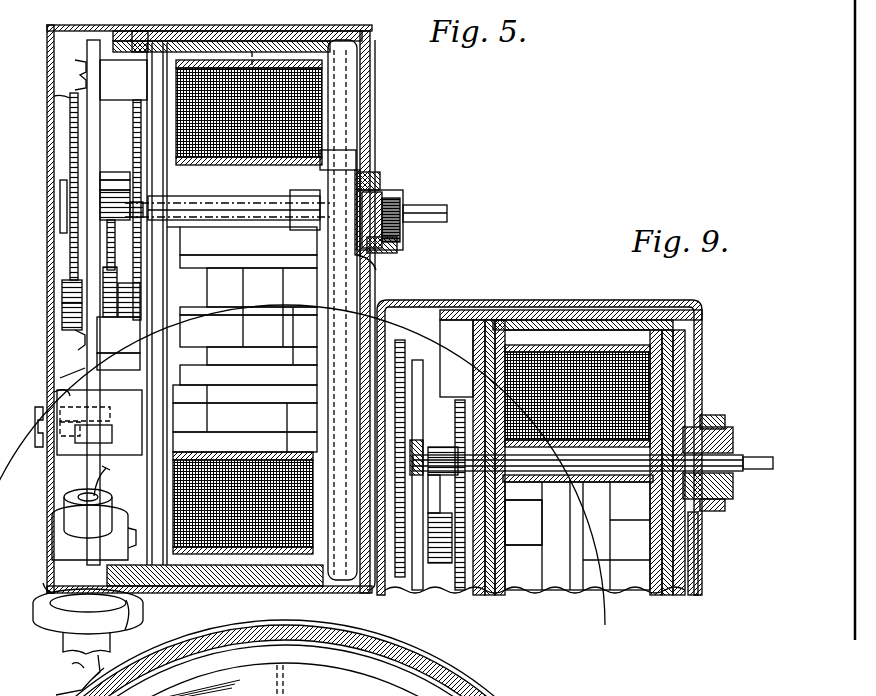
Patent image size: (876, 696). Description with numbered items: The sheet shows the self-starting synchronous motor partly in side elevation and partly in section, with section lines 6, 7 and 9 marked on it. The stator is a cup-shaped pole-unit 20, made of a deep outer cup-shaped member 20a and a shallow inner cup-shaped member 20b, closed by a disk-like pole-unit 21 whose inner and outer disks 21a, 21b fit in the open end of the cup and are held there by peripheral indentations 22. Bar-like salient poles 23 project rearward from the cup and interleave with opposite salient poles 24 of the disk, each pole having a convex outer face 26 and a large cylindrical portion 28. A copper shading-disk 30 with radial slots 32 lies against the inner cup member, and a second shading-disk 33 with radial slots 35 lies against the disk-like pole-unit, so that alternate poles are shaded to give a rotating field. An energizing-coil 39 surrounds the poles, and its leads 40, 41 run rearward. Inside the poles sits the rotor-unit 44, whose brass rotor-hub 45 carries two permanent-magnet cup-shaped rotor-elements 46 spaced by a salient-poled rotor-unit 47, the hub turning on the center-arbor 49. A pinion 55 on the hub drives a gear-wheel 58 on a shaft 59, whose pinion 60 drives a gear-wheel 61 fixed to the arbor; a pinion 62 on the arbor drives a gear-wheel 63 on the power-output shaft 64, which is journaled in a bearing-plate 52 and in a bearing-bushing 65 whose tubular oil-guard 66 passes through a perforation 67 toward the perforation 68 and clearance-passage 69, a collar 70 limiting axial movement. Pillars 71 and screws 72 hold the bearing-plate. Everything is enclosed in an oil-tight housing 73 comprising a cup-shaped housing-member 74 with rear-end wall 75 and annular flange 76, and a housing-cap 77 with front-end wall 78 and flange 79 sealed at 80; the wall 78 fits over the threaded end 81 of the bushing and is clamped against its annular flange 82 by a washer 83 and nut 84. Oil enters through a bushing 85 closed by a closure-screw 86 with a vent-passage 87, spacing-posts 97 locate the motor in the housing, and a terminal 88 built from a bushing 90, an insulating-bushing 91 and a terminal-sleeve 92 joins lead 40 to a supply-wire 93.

In FIG. 5, the cup-shaped pole-unit 20 is at (371, 36).
In FIG. 9, the cup-shaped pole-unit 20 is at (690, 330).
In FIG. 5, the outer cup-shaped member 20a is at (357, 52).
In FIG. 9, the outer cup-shaped member 20a is at (690, 304).
In FIG. 5, the inner cup-shaped member 20b is at (336, 76).
In FIG. 9, the inner cup-shaped member 20b is at (642, 312).
In FIG. 5, the disk-like pole-unit 21 is at (150, 44).
In FIG. 9, the disk-like pole-unit 21 is at (482, 320).
In FIG. 5, the inner disk 21a is at (195, 33).
In FIG. 9, the inner disk 21a is at (500, 322).
In FIG. 5, the outer disk 21b is at (130, 44).
In FIG. 9, the outer disk 21b is at (473, 348).
In FIG. 5, the indentation 22 is at (135, 622).
In FIG. 5, the salient pole 23 is at (340, 158).
In FIG. 5, the salient pole 24 is at (250, 248).
In FIG. 5, the convex outer face 26 is at (298, 294).
In FIG. 5, the cylindrical portion 28 is at (300, 403).
In FIG. 5, the shading-disk 30 is at (320, 292).
In FIG. 9, the shading-disk 30 is at (652, 596).
In FIG. 5, the radial slot 32 is at (310, 430).
In FIG. 5, the shading-disk 33 is at (180, 250).
In FIG. 9, the shading-disk 33 is at (497, 590).
In FIG. 5, the radial slot 35 is at (182, 184).
In FIG. 5, the energizing-coil 39 is at (310, 102).
In FIG. 9, the energizing-coil 39 is at (545, 355).
In FIG. 5, the lead 40 is at (112, 468).
In FIG. 5, the lead 41 is at (134, 526).
In FIG. 5, the rotor-unit 44 is at (218, 370).
In FIG. 9, the rotor-unit 44 is at (566, 590).
In FIG. 9, the rotor-hub 45 is at (618, 590).
In FIG. 5, the cup-shaped rotor-element 46 is at (218, 320).
In FIG. 9, the cup-shaped rotor-element 46 is at (540, 590).
In FIG. 5, the salient-poled rotor-unit 47 is at (258, 315).
In FIG. 9, the salient-poled rotor-unit 47 is at (566, 570).
In FIG. 5, the center-arbor 49 is at (62, 310).
In FIG. 5, the bearing-plate 52 is at (60, 378).
In FIG. 9, the bearing-plate 52 is at (418, 362).
In FIG. 5, the pinion 55 is at (103, 270).
In FIG. 5, the gear-wheel 58 is at (133, 118).
In FIG. 9, the gear-wheel 58 is at (460, 592).
In FIG. 9, the shaft 59 is at (440, 513).
In FIG. 5, the pinion 60 is at (120, 172).
In FIG. 9, the pinion 60 is at (440, 592).
In FIG. 5, the gear-wheel 61 is at (107, 240).
In FIG. 5, the pinion 62 is at (62, 290).
In FIG. 5, the gear-wheel 63 is at (70, 128).
In FIG. 9, the gear-wheel 63 is at (400, 342).
In FIG. 5, the power-output shaft 64 is at (60, 205).
In FIG. 9, the power-output shaft 64 is at (752, 473).
In FIG. 5, the bearing-bushing 65 is at (388, 176).
In FIG. 9, the bearing-bushing 65 is at (712, 418).
In FIG. 5, the oil-guard 66 is at (302, 238).
In FIG. 9, the oil-guard 66 is at (630, 482).
In FIG. 9, the perforation 67 is at (690, 436).
In FIG. 9, the perforation 68 is at (523, 522).
In FIG. 9, the clearance-passage 69 is at (448, 446).
In FIG. 5, the collar 70 is at (100, 173).
In FIG. 9, the collar 70 is at (428, 440).
In FIG. 5, the pillar 71 is at (96, 42).
In FIG. 9, the pillar 71 is at (458, 396).
In FIG. 5, the screw 72 is at (77, 62).
In FIG. 5, the housing 73 is at (232, 588).
In FIG. 9, the housing 73 is at (574, 308).
In FIG. 5, the cup-shaped housing-member 74 is at (50, 27).
In FIG. 9, the cup-shaped housing-member 74 is at (395, 300).
In FIG. 5, the rear-end wall 75 is at (54, 336).
In FIG. 9, the rear-end wall 75 is at (386, 596).
In FIG. 5, the annular flange 76 is at (205, 598).
In FIG. 9, the annular flange 76 is at (530, 310).
In FIG. 5, the housing-cap 77 is at (360, 592).
In FIG. 9, the housing-cap 77 is at (700, 322).
In FIG. 5, the front-end wall 78 is at (376, 118).
In FIG. 9, the front-end wall 78 is at (703, 345).
In FIG. 5, the annular flange 79 is at (320, 592).
In FIG. 9, the annular flange 79 is at (652, 316).
In FIG. 5, the sealed joint 80 is at (238, 552).
In FIG. 9, the sealed joint 80 is at (606, 325).
In FIG. 5, the externally-threaded forward end 81 is at (402, 198).
In FIG. 9, the externally-threaded forward end 81 is at (734, 444).
In FIG. 5, the annular flange 82 is at (388, 170).
In FIG. 9, the annular flange 82 is at (692, 532).
In FIG. 5, the washer 83 is at (375, 266).
In FIG. 9, the washer 83 is at (702, 520).
In FIG. 5, the nut 84 is at (400, 242).
In FIG. 9, the nut 84 is at (728, 500).
In FIG. 5, the bushing 85 is at (88, 445).
In FIG. 5, the closure-screw 86 is at (35, 427).
In FIG. 5, the vent-passage 87 is at (70, 442).
In FIG. 5, the terminal 88 is at (43, 583).
In FIG. 5, the bushing 90 is at (52, 542).
In FIG. 5, the insulating-bushing 91 is at (64, 500).
In FIG. 5, the terminal-sleeve 92 is at (63, 640).
In FIG. 5, the supply-wire 93 is at (62, 684).
In FIG. 5, the spacing-post 97 is at (54, 96).
In FIG. 5, the section line 6 is at (167, 8).
In FIG. 5, the section line 7 is at (252, 8).
In FIG. 5, the section line 9 is at (467, 695).